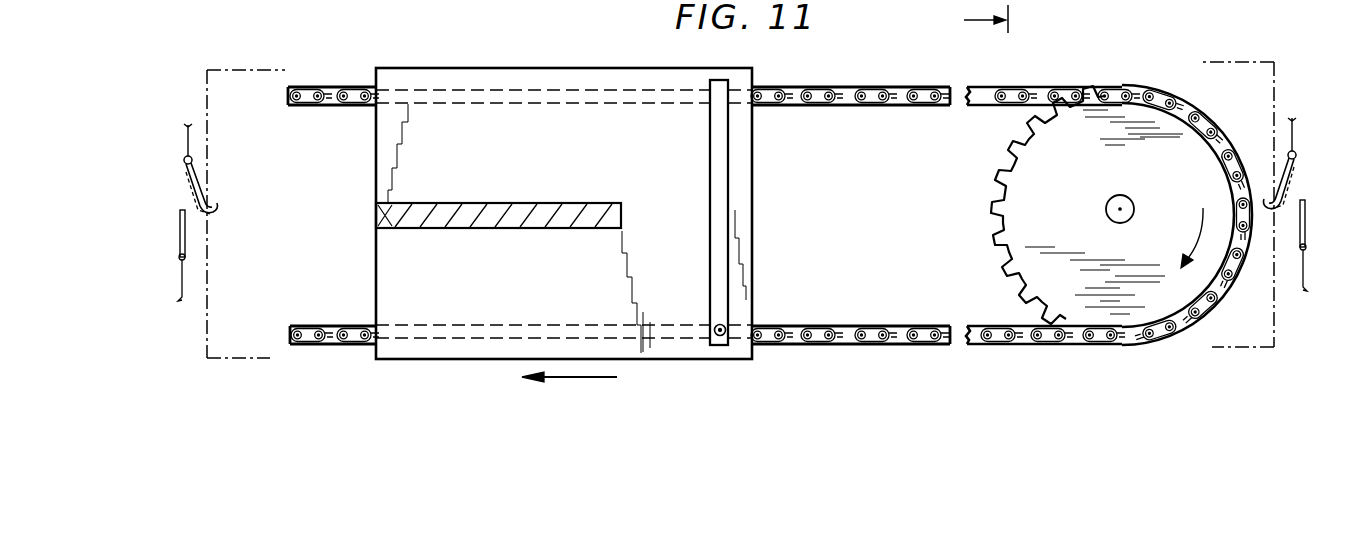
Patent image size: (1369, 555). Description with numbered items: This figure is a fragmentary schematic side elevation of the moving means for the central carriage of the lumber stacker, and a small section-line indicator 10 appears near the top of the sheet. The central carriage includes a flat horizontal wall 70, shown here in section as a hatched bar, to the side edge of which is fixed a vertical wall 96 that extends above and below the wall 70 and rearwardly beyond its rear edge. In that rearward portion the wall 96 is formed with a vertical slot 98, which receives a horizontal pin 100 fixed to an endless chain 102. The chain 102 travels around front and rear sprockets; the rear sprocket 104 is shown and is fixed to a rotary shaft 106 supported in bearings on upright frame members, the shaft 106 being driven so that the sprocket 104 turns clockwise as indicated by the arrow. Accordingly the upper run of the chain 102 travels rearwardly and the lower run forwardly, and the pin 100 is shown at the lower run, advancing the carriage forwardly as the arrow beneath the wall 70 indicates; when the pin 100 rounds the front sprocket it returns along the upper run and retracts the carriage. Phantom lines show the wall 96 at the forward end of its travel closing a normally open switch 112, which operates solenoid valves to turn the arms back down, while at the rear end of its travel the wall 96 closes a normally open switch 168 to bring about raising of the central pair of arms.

The conveyor direction indicator 10 is at (993, 47).
The vertical wall 96 is at (207, 70).
The endless chain 102 is at (334, 95).
The horizontal wall 70 is at (377, 204).
The vertical slot 98 is at (722, 210).
The horizontal pin 100 is at (716, 327).
The rear sprocket 104 is at (1088, 153).
The rotary shaft 106 is at (1106, 210).
The normally open switch 112 is at (184, 188).
The normally open switch 168 is at (1313, 189).